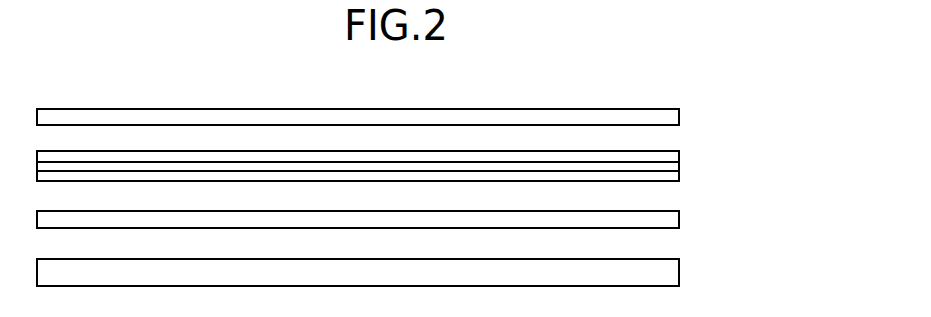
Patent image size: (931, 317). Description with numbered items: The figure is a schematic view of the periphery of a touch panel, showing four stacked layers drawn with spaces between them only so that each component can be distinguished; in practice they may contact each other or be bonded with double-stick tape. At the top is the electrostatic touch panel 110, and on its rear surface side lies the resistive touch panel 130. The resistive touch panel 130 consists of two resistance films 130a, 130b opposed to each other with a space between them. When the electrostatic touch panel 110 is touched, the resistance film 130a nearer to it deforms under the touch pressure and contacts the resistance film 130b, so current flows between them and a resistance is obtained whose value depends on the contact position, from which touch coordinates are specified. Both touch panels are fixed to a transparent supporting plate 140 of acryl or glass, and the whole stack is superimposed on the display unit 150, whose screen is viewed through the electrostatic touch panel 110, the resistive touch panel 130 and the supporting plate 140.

The electrostatic touch panel 110 is at (680, 116).
The resistive touch panel 130 is at (773, 144).
The resistance film 130a is at (680, 155).
The resistance film 130b is at (680, 175).
The supporting plate 140 is at (680, 218).
The display unit 150 is at (680, 267).